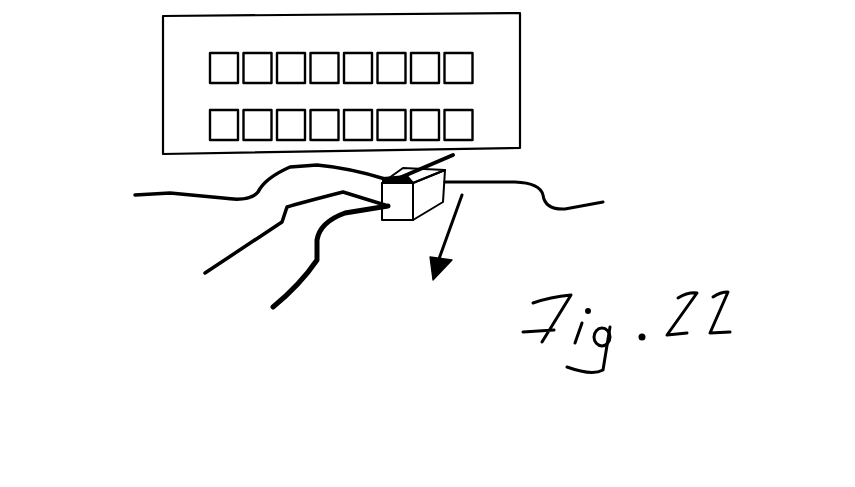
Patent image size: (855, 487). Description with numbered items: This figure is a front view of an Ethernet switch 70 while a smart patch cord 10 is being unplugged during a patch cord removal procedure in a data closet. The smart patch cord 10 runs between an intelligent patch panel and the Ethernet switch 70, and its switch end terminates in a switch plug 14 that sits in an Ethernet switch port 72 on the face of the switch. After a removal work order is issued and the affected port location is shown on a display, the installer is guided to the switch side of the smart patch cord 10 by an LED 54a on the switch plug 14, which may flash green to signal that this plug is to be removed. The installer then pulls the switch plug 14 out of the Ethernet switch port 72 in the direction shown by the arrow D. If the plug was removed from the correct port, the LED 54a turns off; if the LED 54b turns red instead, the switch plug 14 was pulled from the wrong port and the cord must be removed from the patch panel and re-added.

The Ethernet switch 70 is at (520, 72).
The Ethernet switch port 72 is at (473, 118).
The switch plug 14 is at (610, 225).
The LED 54b is at (50, 196).
The LED 54a is at (118, 300).
The smart patch cord 10 is at (320, 403).
The arrow D is at (450, 230).